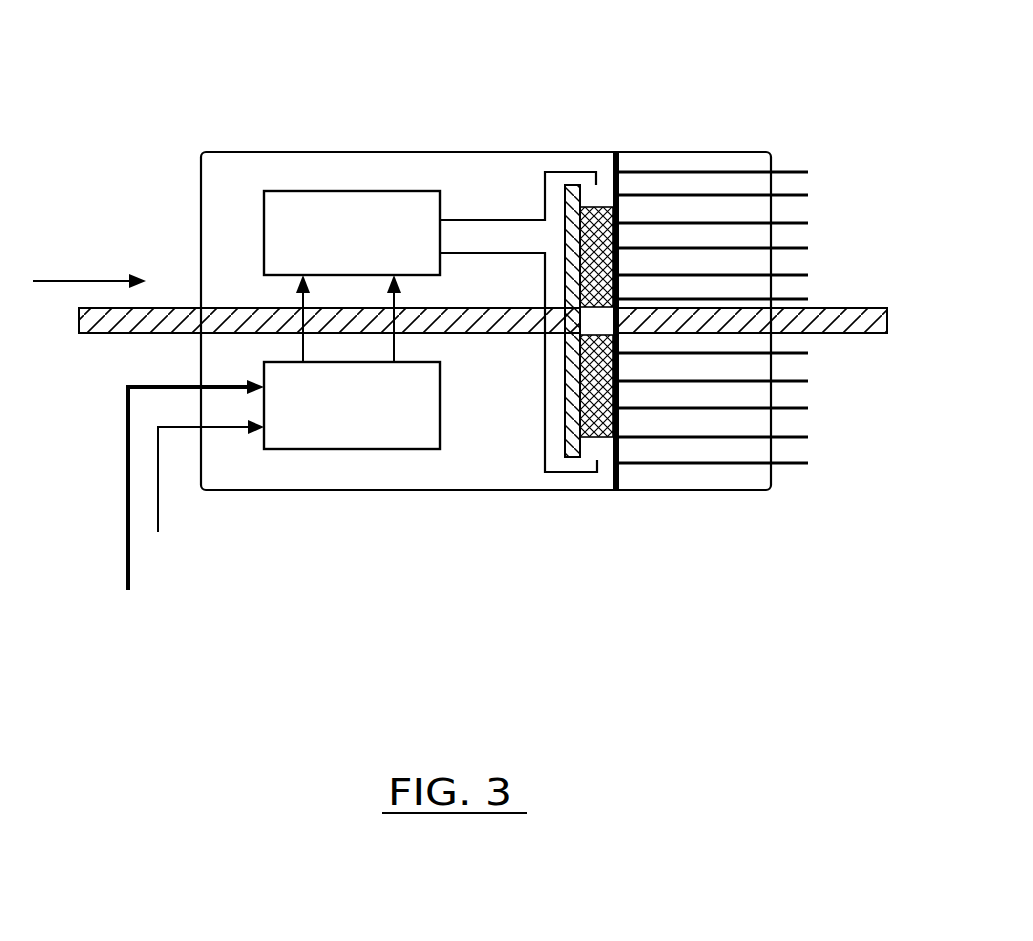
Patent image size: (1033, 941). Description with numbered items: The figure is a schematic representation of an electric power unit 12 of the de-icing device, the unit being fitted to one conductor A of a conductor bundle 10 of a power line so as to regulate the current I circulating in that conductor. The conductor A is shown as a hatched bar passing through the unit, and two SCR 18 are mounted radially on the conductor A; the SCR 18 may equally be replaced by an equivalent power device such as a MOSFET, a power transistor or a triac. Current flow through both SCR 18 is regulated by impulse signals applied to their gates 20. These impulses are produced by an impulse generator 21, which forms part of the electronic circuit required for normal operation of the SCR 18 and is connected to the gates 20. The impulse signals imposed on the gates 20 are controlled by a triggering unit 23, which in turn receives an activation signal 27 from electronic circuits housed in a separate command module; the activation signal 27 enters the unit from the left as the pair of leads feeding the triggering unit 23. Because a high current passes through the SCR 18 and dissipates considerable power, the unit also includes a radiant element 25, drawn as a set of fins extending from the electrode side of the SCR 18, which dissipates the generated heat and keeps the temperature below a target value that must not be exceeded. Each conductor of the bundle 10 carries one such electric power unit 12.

The bundle 10 is at (608, 463).
The electric power unit 12 is at (393, 122).
The SCR 18 is at (620, 237).
The gate 20 is at (604, 183).
The impulse generator 21 is at (308, 191).
The triggering unit 23 is at (353, 420).
The radiant element 25 is at (713, 417).
The activation signal 27 is at (196, 485).
The conductor A is at (860, 306).
The current I is at (76, 268).